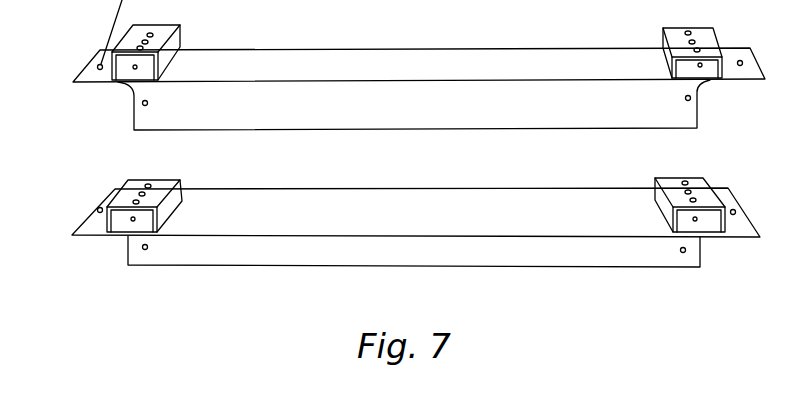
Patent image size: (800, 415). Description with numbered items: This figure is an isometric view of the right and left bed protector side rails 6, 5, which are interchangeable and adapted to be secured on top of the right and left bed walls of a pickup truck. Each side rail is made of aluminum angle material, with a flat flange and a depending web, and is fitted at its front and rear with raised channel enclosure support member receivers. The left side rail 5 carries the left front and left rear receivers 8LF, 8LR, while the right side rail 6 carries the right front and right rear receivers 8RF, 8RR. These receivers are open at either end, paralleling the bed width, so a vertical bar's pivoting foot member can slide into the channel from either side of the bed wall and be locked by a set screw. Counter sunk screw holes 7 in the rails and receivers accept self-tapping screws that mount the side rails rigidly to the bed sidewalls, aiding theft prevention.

The left side rail 5 is at (232, 245).
The right side rail 6 is at (242, 112).
The counter sunk screw holes 7 is at (134, 110).
The right front enclosure support member receiver 8RF is at (170, 52).
The right rear enclosure support member receiver 8RR is at (668, 53).
The left front enclosure support member receiver 8LF is at (175, 193).
The left rear enclosure support member receiver 8LR is at (667, 200).